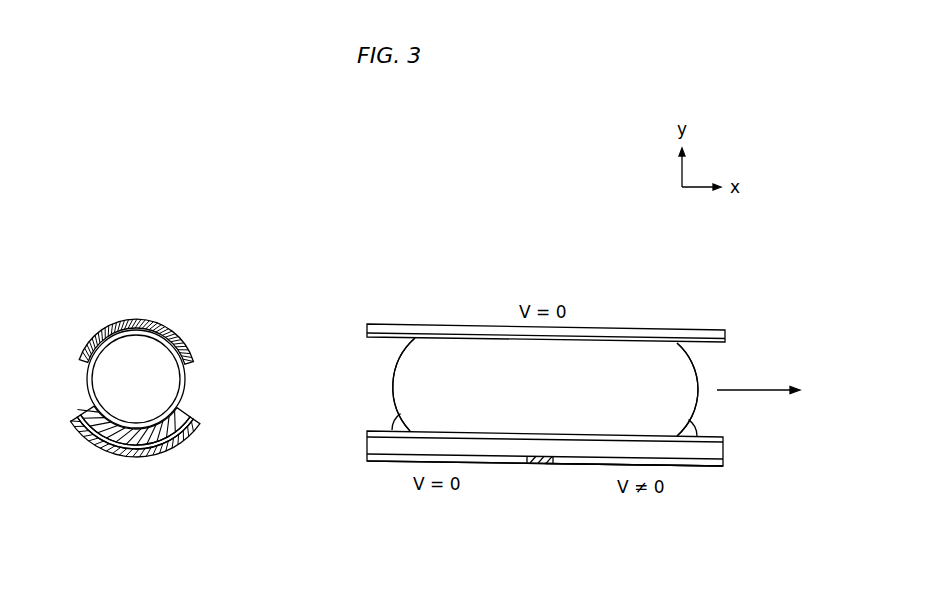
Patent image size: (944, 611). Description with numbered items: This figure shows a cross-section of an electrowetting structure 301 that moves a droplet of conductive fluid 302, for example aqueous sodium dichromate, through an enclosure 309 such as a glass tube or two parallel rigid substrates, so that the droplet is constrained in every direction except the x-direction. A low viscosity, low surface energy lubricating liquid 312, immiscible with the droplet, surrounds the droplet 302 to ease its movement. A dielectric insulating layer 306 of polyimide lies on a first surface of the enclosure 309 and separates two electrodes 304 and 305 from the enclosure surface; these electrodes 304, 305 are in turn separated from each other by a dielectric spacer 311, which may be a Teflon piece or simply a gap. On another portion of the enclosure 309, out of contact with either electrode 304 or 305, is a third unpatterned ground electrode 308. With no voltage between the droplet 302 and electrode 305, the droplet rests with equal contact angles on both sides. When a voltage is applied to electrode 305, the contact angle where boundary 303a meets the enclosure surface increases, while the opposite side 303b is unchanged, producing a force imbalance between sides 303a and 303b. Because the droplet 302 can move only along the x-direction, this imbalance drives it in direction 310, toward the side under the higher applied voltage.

The structure 301 is at (648, 273).
The droplet of conductive fluid 302 is at (642, 357).
The boundary 303a is at (700, 376).
The opposite side of the fluid droplet 303b is at (397, 375).
The electrode 304 is at (367, 459).
The electrode 305 is at (727, 468).
The dielectric insulating layer 306 is at (367, 442).
The ground electrode 308 is at (727, 333).
The enclosure 309 is at (365, 333).
The direction 310 is at (773, 388).
The dielectric spacer 311 is at (533, 466).
The lubricating liquid 312 is at (378, 396).